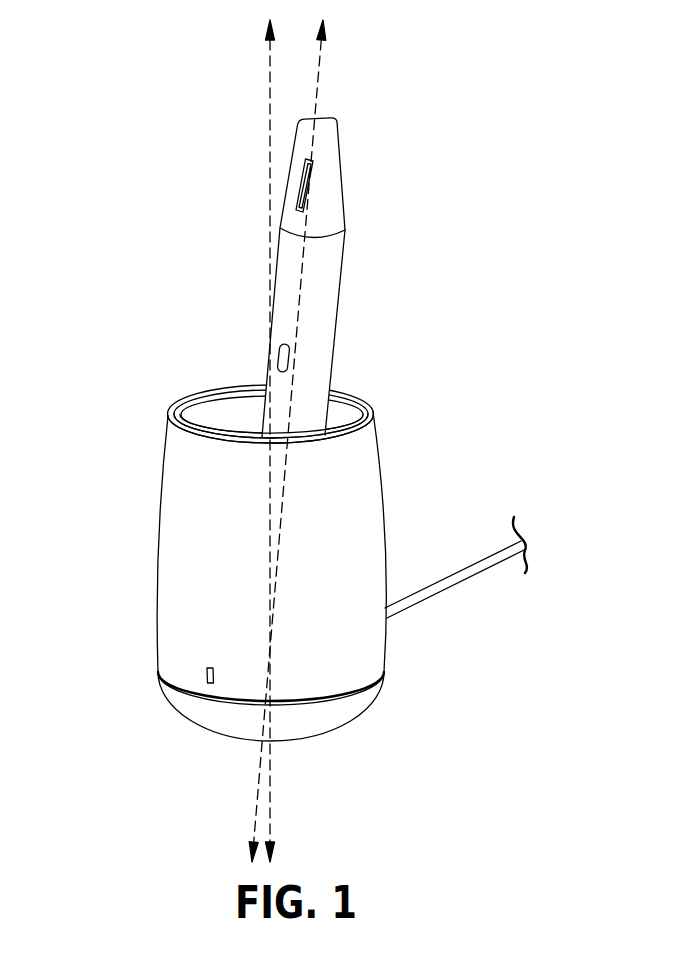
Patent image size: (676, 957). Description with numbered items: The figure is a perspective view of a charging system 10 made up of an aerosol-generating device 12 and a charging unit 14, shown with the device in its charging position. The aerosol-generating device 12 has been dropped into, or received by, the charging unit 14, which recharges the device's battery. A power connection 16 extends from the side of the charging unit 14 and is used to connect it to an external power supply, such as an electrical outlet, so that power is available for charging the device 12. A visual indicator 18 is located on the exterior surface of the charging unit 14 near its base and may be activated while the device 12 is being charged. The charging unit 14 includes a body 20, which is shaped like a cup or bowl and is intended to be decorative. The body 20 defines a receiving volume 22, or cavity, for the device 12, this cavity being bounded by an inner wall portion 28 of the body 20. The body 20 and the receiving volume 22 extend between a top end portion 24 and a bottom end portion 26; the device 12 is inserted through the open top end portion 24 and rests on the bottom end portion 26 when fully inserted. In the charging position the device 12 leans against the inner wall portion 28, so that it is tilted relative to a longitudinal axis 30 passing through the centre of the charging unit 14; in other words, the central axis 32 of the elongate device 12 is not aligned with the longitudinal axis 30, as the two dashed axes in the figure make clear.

The charging system 10 is at (118, 132).
The aerosol-generating device 12 is at (347, 180).
The charging unit 14 is at (153, 578).
The power connection 16 is at (428, 587).
The visual indicator 18 is at (207, 676).
The body 20 is at (162, 458).
The receiving volume 22 is at (235, 408).
The top end portion 24 is at (384, 453).
The bottom end portion 26 is at (394, 691).
The inner wall portion 28 is at (342, 400).
The longitudinal axis 30 is at (268, 117).
The central axis 32 is at (320, 88).